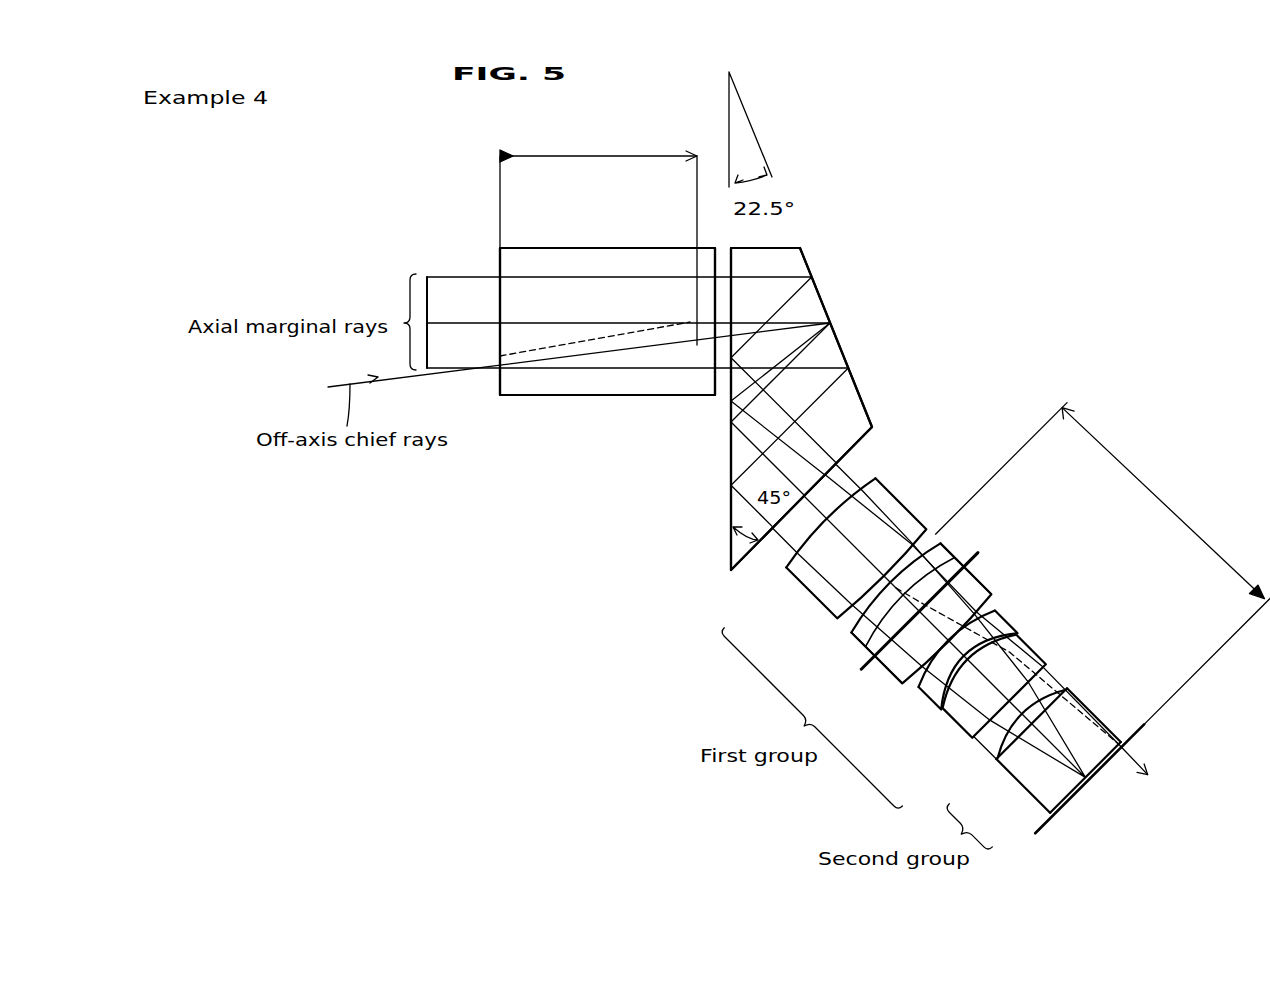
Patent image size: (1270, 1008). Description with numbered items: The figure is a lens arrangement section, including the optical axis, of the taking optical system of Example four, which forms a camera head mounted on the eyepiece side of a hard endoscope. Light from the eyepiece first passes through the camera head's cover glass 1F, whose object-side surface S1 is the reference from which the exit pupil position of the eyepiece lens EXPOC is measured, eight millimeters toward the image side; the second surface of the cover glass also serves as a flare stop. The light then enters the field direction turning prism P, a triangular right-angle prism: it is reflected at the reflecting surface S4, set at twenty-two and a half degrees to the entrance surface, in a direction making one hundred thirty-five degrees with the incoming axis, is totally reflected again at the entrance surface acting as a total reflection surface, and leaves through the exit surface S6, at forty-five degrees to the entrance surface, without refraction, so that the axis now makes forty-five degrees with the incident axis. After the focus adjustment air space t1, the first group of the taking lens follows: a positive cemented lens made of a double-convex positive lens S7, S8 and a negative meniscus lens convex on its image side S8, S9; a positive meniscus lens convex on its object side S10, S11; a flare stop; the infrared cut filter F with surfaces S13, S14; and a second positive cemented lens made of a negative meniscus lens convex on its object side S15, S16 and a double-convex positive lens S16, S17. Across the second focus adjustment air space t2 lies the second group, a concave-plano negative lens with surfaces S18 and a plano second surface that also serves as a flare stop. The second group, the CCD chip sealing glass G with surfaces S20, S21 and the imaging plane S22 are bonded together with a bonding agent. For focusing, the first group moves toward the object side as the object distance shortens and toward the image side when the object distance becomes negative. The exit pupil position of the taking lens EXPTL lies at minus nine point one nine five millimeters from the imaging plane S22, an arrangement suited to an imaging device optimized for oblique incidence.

The cover glass for camera head 1F is at (602, 397).
The first surface of cover glass S1 is at (500, 397).
The field direction turning prism P is at (833, 350).
The reflecting surface S4 is at (808, 265).
The exit surface S6 is at (755, 552).
The focus adjustment spacing t1 is at (815, 510).
The object-side surface of double-convex positive lens S7 is at (858, 480).
The cemented surface of first cemented lens S8 is at (896, 512).
The image-side surface of negative meniscus lens S9 is at (908, 542).
The object-side surface of positive meniscus lens S10 is at (930, 552).
The image-side surface of positive meniscus lens S11 is at (967, 596).
The object-side surface of infrared cut filter S13 is at (960, 576).
The image-side surface of infrared cut filter S14 is at (988, 598).
The object-side surface of negative meniscus lens S15 is at (985, 617).
The cemented surface of second cemented lens S16 is at (1003, 636).
The image-side surface of double-convex positive lens S17 is at (1057, 702).
The object-side surface of concave-plano negative lens S18 is at (1050, 705).
The object-side surface of CCD chip sealing glass S20 is at (1115, 742).
The image-side surface of CCD chip sealing glass S21 is at (1062, 800).
The imaging plane S22 is at (1063, 805).
The infrared cut filter F is at (896, 670).
The CCD chip sealing glass G is at (1147, 718).
The focus adjustment spacing t2 is at (1018, 722).
The exit pupil position of eyepiece lens EXPOC is at (598, 237).
The exit pupil position of taking lens EXPTL is at (1103, 545).